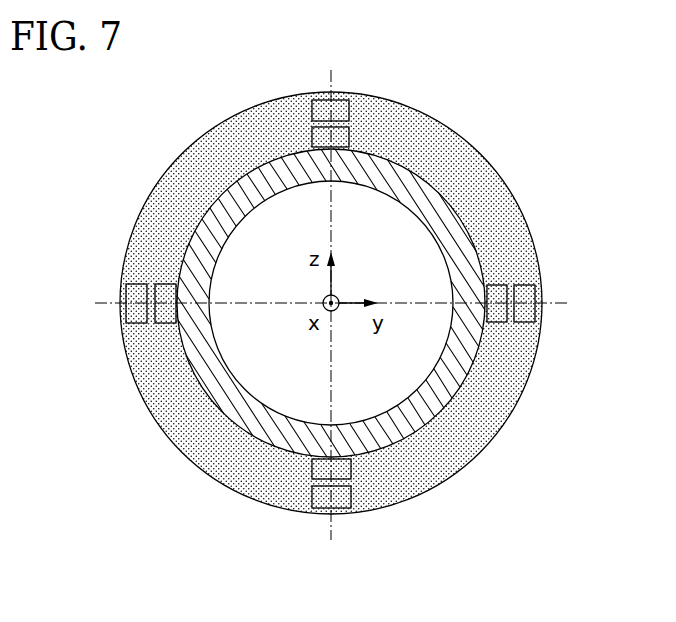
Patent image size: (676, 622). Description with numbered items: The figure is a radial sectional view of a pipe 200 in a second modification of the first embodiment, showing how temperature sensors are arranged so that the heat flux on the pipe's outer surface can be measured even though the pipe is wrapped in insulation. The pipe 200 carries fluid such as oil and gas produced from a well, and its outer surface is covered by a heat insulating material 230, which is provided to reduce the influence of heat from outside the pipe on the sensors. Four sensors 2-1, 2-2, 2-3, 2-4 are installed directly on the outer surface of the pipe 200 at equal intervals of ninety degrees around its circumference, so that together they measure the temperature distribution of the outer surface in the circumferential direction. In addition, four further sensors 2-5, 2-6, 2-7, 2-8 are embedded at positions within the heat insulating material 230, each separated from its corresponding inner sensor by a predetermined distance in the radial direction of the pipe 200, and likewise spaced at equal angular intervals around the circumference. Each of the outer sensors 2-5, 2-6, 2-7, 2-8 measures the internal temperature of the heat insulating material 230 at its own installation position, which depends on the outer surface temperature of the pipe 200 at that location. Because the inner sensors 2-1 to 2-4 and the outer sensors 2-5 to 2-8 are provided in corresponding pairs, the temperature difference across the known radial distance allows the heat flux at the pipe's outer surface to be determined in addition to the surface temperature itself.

The heat insulating material 230 is at (505, 390).
The pipe 200 is at (455, 235).
The sensor 2-1 is at (497, 285).
The sensor 2-2 is at (351, 137).
The sensor 2-3 is at (162, 284).
The sensor 2-4 is at (312, 472).
The sensor 2-5 is at (525, 285).
The sensor 2-6 is at (318, 99).
The sensor 2-7 is at (137, 324).
The sensor 2-8 is at (352, 498).